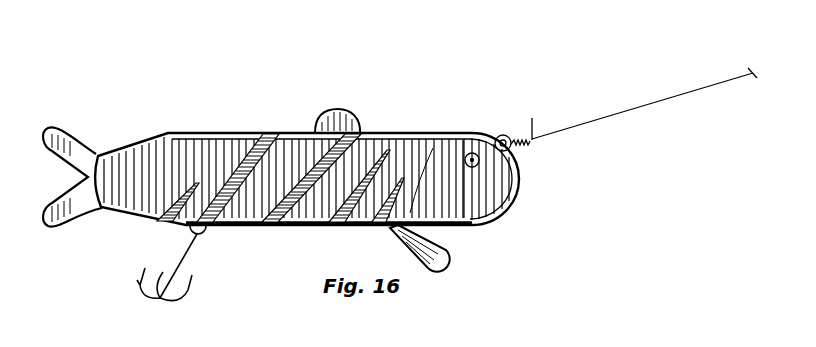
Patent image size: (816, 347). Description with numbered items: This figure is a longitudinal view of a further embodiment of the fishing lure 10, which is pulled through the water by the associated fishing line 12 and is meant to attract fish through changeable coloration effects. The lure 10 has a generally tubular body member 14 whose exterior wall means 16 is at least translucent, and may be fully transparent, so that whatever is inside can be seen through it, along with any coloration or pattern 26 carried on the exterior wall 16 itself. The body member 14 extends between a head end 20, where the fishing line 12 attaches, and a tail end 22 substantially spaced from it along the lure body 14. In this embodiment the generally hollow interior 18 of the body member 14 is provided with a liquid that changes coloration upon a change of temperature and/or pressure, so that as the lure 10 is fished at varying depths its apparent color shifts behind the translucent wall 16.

The fishing lure 10 is at (307, 183).
The fishing line 12 is at (706, 95).
The body member 14 is at (401, 132).
The exterior wall means 16 is at (373, 140).
The hollow interior 18 is at (205, 156).
The head end 20 is at (480, 136).
The tail end 22 is at (135, 141).
The coloration or pattern 26 is at (322, 229).